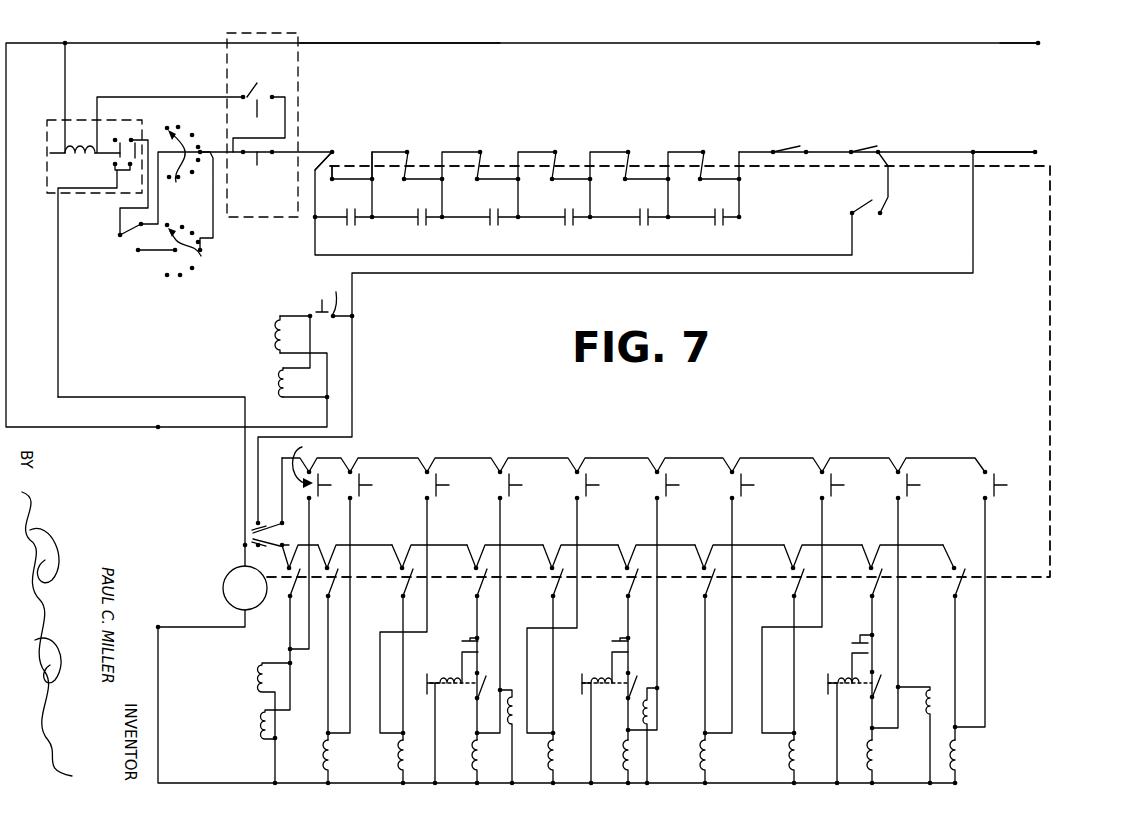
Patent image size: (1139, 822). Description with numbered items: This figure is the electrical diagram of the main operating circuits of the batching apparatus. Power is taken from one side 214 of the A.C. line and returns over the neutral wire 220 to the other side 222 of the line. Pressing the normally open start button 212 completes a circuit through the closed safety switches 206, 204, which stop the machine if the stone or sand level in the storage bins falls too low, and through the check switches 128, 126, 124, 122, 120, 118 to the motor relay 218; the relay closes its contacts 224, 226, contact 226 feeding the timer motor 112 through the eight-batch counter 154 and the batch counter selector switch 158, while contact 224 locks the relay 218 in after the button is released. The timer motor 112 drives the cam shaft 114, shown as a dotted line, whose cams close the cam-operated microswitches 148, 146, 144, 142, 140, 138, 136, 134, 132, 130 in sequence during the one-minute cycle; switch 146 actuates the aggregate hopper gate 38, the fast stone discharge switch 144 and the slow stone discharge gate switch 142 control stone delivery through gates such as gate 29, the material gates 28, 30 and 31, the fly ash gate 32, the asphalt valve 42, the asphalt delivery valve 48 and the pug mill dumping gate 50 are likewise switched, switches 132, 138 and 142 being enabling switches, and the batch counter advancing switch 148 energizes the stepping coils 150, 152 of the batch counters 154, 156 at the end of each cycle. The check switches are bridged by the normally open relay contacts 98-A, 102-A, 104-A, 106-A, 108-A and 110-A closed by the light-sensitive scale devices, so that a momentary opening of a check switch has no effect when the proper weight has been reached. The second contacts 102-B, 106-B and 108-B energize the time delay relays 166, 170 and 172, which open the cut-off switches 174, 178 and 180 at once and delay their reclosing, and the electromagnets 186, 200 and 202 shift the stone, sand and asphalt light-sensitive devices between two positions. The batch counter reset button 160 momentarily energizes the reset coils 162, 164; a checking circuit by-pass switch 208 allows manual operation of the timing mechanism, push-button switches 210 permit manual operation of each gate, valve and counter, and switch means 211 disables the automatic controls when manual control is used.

The neutral wire 220 is at (400, 56).
The other side of the A.C. power line 222 is at (1040, 45).
The one side of the A.C. line 214 is at (1036, 152).
The start button 212 is at (253, 96).
The motor relay 218 is at (84, 168).
The motor relay contact 224 is at (114, 138).
The motor relay contact 226 is at (131, 138).
The eight-batch counter 154 is at (190, 190).
The five-batch counter 156 is at (203, 256).
The batch counter selector switch 158 is at (119, 238).
The check switch 118 is at (350, 142).
The check switch 120 is at (436, 134).
The check switch 122 is at (510, 134).
The check switch 124 is at (584, 134).
The stone check switch 126 is at (642, 134).
The aggregate check switch 128 is at (715, 134).
The safety switch 204 is at (807, 120).
The safety switch 206 is at (886, 120).
The checking circuit by-pass switch 208 is at (880, 218).
The cam shaft 114 is at (823, 167).
The normally open relay contacts 102-A is at (356, 227).
The normally open relay contacts 98-A is at (422, 227).
The normally open relay contacts 104-A is at (494, 227).
The normally open relay contacts 106-A is at (571, 227).
The normally open relay contacts 108-A is at (645, 227).
The normally open relay contacts 110-A is at (719, 227).
The batch counter reset button 160 is at (336, 292).
The batch counter reset coil 162 is at (274, 332).
The batch counter reset coil 164 is at (277, 385).
The push-button switches 210 is at (644, 588).
The switch means 211 is at (250, 532).
The timer motor 112 is at (223, 588).
The batch counter advancing switch 148 is at (292, 582).
The microswitch 146 is at (340, 583).
The fast stone discharge switch 144 is at (413, 582).
The slow stone discharge gate switch 142 is at (486, 582).
The microswitch 140 is at (561, 582).
The enabling switch 138 is at (637, 582).
The microswitch 136 is at (714, 582).
The microswitch 134 is at (803, 582).
The enabling switch 132 is at (882, 582).
The microswitch 130 is at (965, 582).
The stepping coil 150 is at (258, 680).
The stepping coil 152 is at (261, 730).
The aggregate hopper gate 38 is at (323, 758).
The gate 28 is at (398, 758).
The gate 29 is at (472, 760).
The gate 30 is at (548, 760).
The solenoid coil 31 is at (623, 760).
The fly ash gate 32 is at (713, 755).
The delivery valve 48 is at (800, 746).
The valve 42 is at (878, 758).
The dumping gate 50 is at (962, 755).
The normally open relay contacts 108-B is at (460, 651).
The cut-off switch 180 is at (484, 681).
The time delay relay 172 is at (460, 690).
The electromagnet 186 is at (518, 704).
The normally open relay contacts 106-B is at (611, 645).
The cut-off switch 178 is at (636, 680).
The time delay relay 170 is at (612, 690).
The electromagnet 200 is at (652, 712).
The normally open relay contacts 102-B is at (851, 645).
The cut-off switch 174 is at (878, 680).
The time delay relay 166 is at (848, 692).
The electromagnet 202 is at (931, 690).